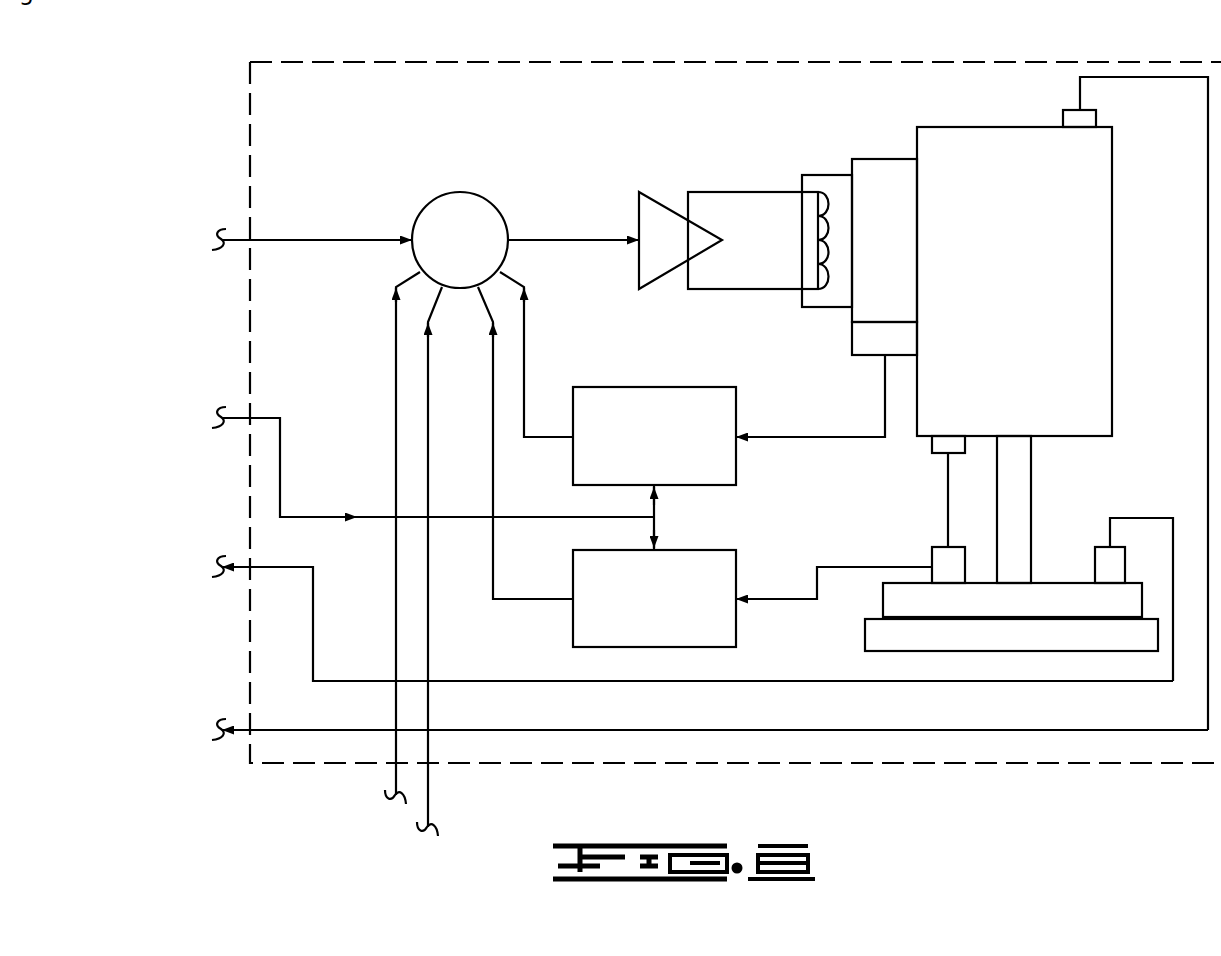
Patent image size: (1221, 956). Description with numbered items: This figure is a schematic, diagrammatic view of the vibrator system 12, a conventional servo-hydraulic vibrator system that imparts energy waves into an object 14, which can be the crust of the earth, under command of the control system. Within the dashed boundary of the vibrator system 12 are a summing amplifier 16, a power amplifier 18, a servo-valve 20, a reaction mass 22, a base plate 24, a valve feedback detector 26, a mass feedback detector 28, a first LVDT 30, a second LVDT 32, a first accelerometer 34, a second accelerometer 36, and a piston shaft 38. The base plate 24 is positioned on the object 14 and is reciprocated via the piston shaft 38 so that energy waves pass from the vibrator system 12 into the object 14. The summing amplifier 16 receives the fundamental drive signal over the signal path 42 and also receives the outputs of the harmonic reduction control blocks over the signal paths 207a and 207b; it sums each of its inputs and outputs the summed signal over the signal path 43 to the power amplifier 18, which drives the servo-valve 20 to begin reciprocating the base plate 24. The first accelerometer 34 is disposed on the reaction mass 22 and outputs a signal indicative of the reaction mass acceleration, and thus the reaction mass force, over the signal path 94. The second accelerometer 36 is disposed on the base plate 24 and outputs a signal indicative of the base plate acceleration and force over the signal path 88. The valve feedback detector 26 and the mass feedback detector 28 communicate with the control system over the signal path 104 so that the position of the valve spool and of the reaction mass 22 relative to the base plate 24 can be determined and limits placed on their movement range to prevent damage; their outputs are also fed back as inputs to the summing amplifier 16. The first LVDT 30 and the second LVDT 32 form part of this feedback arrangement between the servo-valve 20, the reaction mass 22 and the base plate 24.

The vibrator system 12 is at (872, 60).
The object 14 is at (865, 632).
The summing amplifier 16 is at (480, 197).
The power amplifier 18 is at (650, 205).
The servo-valve 20 is at (876, 159).
The reaction mass 22 is at (972, 127).
The base plate 24 is at (1048, 583).
The valve feedback detector 26 is at (736, 468).
The mass feedback detector 28 is at (736, 555).
The first LVDT 30 is at (852, 345).
The second LVDT 32 is at (932, 550).
The first accelerometer 34 is at (1096, 114).
The second accelerometer 36 is at (1095, 547).
The piston shaft 38 is at (1031, 475).
The signal path 42 is at (274, 240).
The signal path 43 is at (563, 242).
The signal path 88 is at (278, 567).
The signal path 94 is at (284, 730).
The signal path 104 is at (272, 418).
The signal path 207a is at (396, 356).
The signal path 207b is at (428, 643).